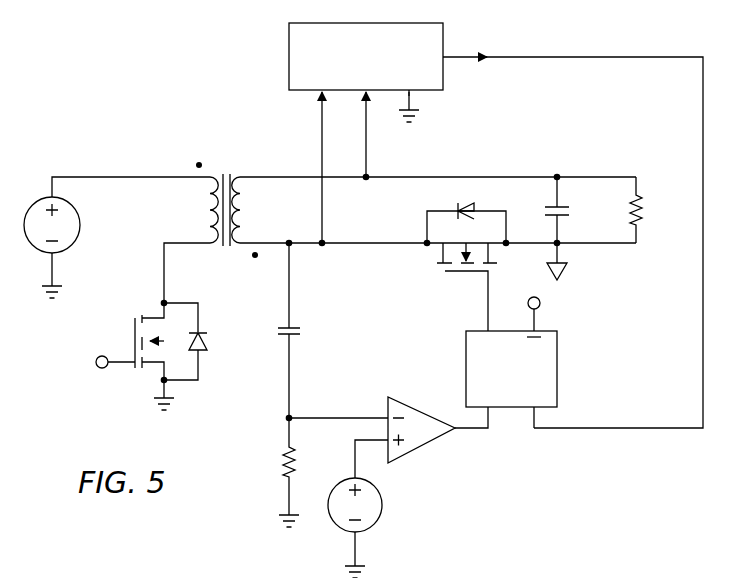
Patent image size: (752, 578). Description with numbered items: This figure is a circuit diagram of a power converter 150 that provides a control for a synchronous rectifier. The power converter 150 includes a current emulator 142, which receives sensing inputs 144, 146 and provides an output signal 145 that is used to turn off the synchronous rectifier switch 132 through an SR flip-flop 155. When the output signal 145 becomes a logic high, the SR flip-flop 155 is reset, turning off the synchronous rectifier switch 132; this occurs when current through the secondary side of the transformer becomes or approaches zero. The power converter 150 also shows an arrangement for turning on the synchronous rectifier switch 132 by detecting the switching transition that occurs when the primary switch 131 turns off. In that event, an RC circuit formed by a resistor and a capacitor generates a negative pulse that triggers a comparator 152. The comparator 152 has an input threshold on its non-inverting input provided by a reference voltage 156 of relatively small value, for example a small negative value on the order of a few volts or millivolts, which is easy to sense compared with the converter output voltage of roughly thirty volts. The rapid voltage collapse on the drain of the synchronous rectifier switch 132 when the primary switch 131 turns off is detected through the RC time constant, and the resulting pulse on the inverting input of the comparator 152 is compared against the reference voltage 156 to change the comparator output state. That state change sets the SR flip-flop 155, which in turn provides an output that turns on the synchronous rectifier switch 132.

The power converter 150 is at (143, 61).
The primary switch 131 is at (112, 336).
The synchronous rectifier switch 132 is at (456, 283).
The current emulator 142 is at (289, 52).
The secondary voltage sense input 144 is at (322, 145).
The output signal 145 is at (465, 56).
The output voltage sense input 146 is at (366, 137).
The comparator 152 is at (425, 450).
The SR flip-flop 155 is at (557, 368).
The reference voltage 156 is at (382, 505).